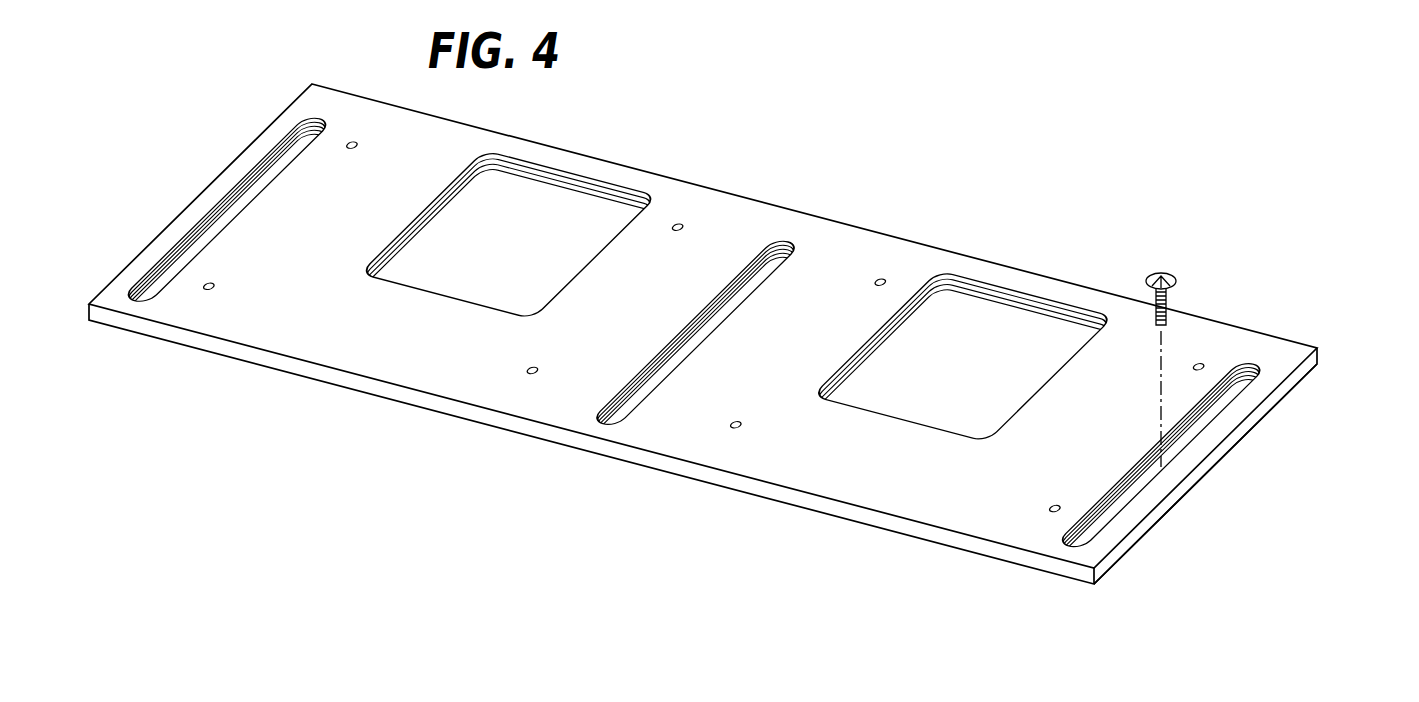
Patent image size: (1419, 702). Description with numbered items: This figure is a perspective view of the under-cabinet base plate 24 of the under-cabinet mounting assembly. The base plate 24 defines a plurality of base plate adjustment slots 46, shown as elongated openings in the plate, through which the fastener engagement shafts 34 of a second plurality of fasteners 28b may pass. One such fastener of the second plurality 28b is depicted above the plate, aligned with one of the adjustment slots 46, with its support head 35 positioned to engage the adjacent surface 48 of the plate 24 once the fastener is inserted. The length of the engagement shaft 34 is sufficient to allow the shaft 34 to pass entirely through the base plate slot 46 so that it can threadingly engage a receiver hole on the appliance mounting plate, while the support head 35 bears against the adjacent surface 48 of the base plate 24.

The under-cabinet base plate 24 is at (752, 334).
The second plurality of fasteners 28b is at (1201, 340).
The support head 35 is at (1176, 288).
The fastener engagement shaft 34 is at (1168, 318).
The base plate adjustment slot 46 is at (1248, 387).
The adjacent surface 48 is at (1108, 533).